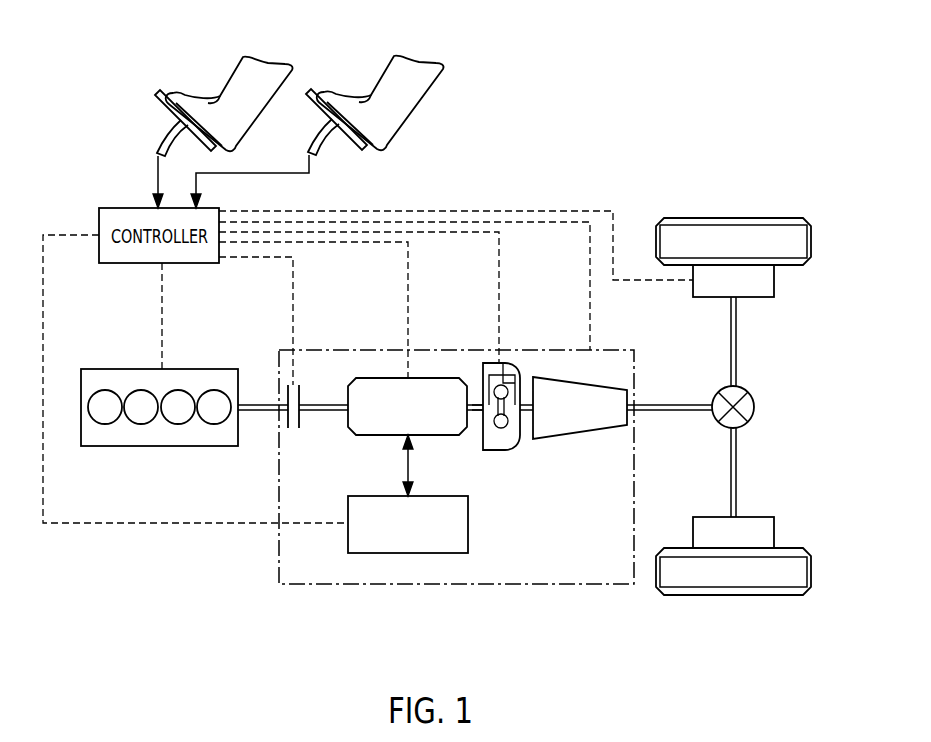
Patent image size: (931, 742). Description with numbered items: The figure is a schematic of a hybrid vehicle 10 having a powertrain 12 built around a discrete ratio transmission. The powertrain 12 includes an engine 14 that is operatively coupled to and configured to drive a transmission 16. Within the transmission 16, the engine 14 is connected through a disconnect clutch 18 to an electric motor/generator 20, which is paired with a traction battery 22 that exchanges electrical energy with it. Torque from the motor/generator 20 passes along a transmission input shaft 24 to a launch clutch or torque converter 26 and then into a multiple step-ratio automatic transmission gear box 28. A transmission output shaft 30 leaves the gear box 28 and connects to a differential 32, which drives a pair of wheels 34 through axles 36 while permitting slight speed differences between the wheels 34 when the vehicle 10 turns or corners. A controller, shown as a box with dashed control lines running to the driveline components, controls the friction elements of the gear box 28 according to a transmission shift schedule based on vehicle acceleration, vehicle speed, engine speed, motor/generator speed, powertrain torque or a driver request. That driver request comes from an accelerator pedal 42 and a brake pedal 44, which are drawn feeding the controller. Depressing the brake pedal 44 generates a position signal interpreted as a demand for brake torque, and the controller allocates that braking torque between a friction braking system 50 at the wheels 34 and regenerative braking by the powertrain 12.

The vehicle 10 is at (646, 157).
The powertrain 12 is at (249, 556).
The engine 14 is at (130, 369).
The transmission 16 is at (436, 350).
The disconnect clutch 18 is at (289, 430).
The electric motor/generator 20 is at (390, 378).
The traction battery 22 is at (468, 525).
The transmission input shaft 24 is at (474, 403).
The launch clutch or torque converter 26 is at (496, 450).
The transmission gear box 28 is at (574, 439).
The transmission output shaft 30 is at (672, 403).
The differential 32 is at (755, 407).
The wheels 34 is at (735, 218).
The axles 36 is at (738, 335).
The accelerator pedal 42 is at (168, 111).
The brake pedal 44 is at (320, 111).
The friction braking system 50 is at (774, 283).